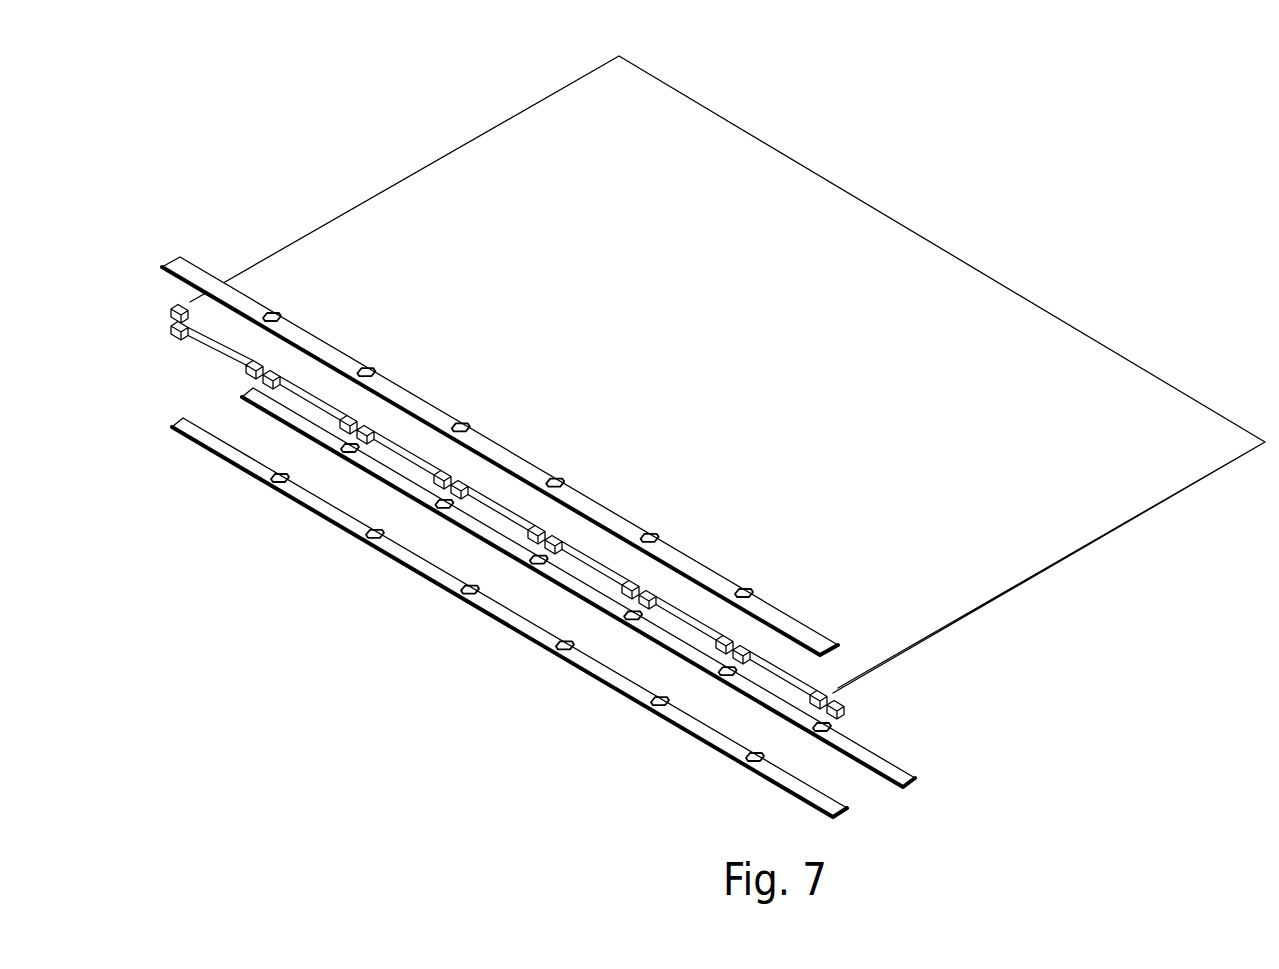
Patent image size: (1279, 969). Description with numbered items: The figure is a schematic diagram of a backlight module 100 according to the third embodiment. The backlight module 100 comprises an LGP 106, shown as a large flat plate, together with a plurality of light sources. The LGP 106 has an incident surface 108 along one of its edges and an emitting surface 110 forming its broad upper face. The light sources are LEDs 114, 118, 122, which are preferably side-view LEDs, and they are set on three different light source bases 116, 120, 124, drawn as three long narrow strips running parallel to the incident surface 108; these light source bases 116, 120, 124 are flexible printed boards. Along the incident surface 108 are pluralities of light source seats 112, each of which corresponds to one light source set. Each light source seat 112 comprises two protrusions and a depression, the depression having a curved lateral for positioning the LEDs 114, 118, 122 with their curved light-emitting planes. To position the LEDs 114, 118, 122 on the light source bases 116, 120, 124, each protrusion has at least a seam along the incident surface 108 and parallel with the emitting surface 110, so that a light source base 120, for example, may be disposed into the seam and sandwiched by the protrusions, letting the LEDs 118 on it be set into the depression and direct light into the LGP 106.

The backlight module 100 is at (1082, 205).
The LGP 106 is at (727, 374).
The incident surface 108 is at (495, 512).
The emitting surface 110 is at (735, 421).
The light source seat 112 is at (259, 382).
The LED 114 is at (310, 496).
The light source base 116 is at (509, 617).
The LED 118 is at (351, 454).
The light source base 120 is at (578, 587).
The LED 122 is at (370, 373).
The light source base 124 is at (500, 456).